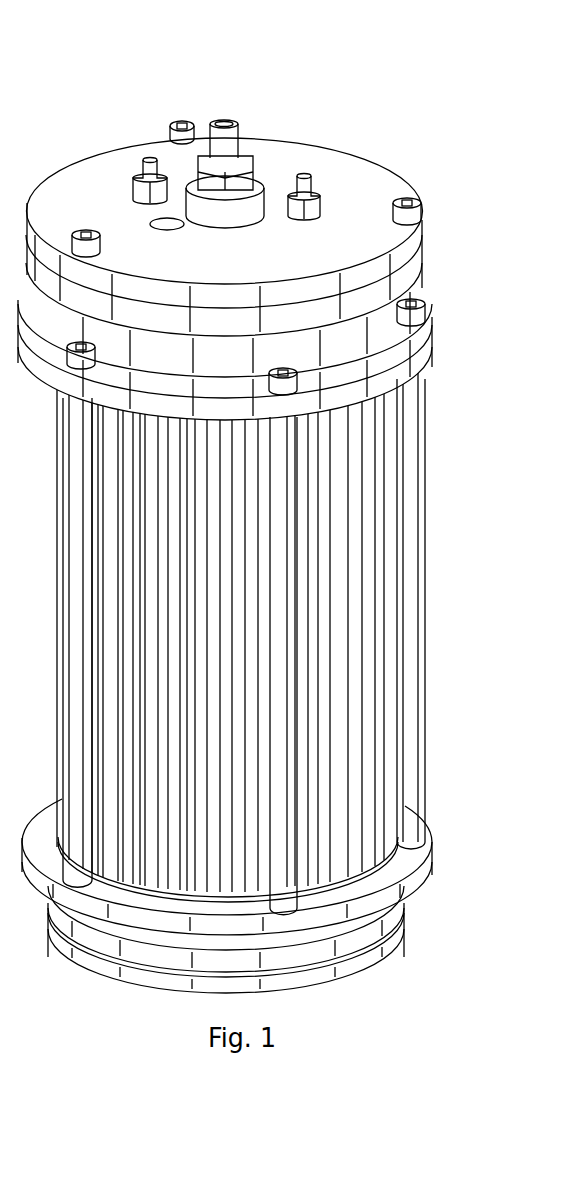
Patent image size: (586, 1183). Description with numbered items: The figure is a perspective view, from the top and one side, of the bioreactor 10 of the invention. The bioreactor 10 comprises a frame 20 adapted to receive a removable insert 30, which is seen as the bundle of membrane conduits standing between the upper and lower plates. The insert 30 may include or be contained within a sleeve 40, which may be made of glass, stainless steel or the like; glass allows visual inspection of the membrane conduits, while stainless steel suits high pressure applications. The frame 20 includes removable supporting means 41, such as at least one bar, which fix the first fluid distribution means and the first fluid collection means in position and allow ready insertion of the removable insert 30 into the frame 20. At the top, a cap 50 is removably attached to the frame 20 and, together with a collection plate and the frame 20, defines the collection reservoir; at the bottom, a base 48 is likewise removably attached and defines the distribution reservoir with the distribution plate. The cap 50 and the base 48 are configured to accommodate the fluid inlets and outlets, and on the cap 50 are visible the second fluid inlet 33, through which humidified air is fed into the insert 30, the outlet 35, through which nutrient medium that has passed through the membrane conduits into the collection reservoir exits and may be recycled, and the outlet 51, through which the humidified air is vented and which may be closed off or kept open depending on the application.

The bioreactor 10 is at (275, 516).
The frame 20 is at (434, 344).
The removable insert 30 is at (370, 684).
The second fluid inlet 33 is at (150, 157).
The outlet 35 is at (152, 220).
The sleeve 40 is at (399, 527).
The removable supporting means 41 is at (428, 598).
The base 48 is at (400, 957).
The cap 50 is at (430, 222).
The outlet 51 is at (226, 120).